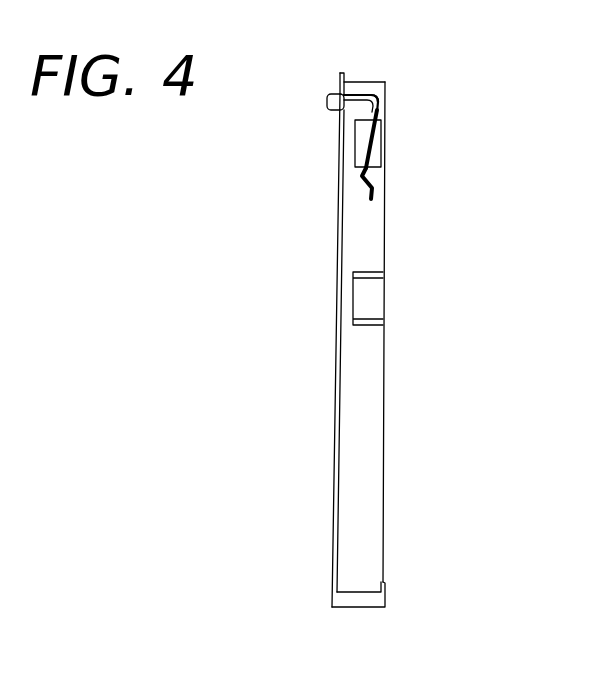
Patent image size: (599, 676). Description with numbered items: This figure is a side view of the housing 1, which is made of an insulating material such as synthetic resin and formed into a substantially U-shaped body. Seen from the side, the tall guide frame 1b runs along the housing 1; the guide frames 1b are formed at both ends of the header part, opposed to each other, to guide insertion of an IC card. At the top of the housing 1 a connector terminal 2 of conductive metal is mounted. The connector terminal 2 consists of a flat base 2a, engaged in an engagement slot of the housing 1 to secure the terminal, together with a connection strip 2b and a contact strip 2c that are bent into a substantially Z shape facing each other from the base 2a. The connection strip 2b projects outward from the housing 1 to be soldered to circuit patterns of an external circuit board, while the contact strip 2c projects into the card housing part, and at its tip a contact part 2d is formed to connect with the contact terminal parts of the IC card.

The housing 1 is at (335, 454).
The guide frame 1b is at (365, 388).
The connector terminal 2 is at (383, 111).
The base 2a is at (365, 94).
The connection strip 2b is at (338, 75).
The contact strip 2c is at (377, 137).
The contact part 2d is at (362, 183).